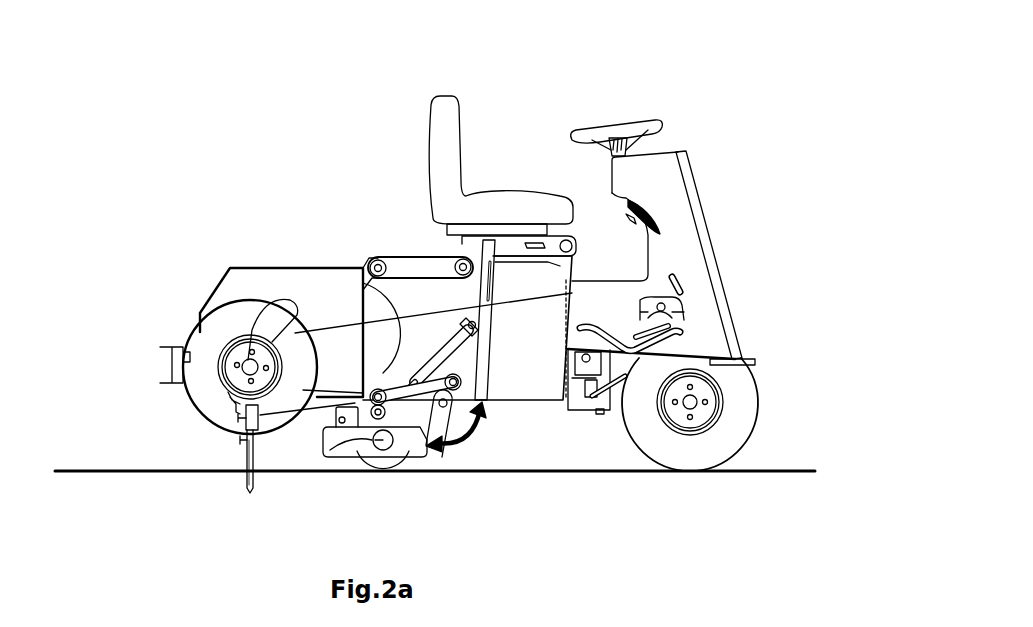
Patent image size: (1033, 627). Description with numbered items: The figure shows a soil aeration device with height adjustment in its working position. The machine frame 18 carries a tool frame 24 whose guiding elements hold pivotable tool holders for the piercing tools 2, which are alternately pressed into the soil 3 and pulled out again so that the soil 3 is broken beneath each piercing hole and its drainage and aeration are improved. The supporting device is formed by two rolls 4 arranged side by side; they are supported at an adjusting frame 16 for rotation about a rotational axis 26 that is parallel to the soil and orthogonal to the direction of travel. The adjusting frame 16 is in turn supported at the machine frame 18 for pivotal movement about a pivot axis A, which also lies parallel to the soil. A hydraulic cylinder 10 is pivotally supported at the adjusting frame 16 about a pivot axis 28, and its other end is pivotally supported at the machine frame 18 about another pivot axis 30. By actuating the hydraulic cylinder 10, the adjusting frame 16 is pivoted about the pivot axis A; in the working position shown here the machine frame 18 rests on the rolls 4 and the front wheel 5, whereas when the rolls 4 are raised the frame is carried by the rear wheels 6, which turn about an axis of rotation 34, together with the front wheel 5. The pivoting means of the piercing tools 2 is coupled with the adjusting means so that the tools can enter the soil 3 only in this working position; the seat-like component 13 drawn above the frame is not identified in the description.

The piercing tool 2 is at (250, 475).
The soil 3 is at (772, 471).
The roll 4 is at (382, 462).
The front wheel 5 is at (689, 450).
The rear wheel 6 is at (205, 388).
The hydraulic cylinder 10 is at (487, 347).
The seat 13 is at (445, 113).
The adjusting frame 16 is at (407, 438).
The machine frame 18 is at (531, 385).
The tool frame 24 is at (243, 282).
The rotational axis 26 is at (373, 440).
The pivot axis 28 is at (368, 288).
The pivot axis 30 is at (472, 323).
The axis of rotation 34 is at (240, 355).
The pivot axis A is at (443, 417).